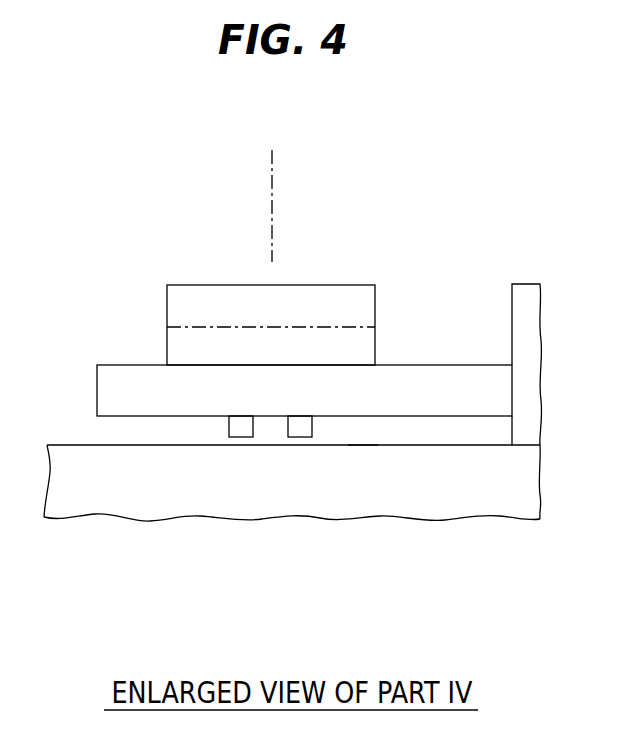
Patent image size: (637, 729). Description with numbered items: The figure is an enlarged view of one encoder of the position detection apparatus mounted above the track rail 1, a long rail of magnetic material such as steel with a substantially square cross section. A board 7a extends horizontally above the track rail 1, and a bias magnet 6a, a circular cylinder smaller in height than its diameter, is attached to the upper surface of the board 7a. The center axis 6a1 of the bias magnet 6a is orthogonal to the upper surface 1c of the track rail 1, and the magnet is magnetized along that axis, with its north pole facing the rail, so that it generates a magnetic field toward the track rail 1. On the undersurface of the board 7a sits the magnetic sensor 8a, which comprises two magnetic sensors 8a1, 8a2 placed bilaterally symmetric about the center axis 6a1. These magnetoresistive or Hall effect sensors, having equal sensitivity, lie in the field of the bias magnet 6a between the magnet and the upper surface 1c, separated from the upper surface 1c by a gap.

The track rail 1 is at (160, 497).
The upper surface 1c is at (348, 445).
The bias magnet 6a is at (215, 305).
The center axis 6a1 is at (272, 190).
The board 7a is at (300, 395).
The magnetic sensor 8a is at (282, 524).
The magnetic sensor 8a1 is at (241, 432).
The magnetic sensor 8a2 is at (301, 432).